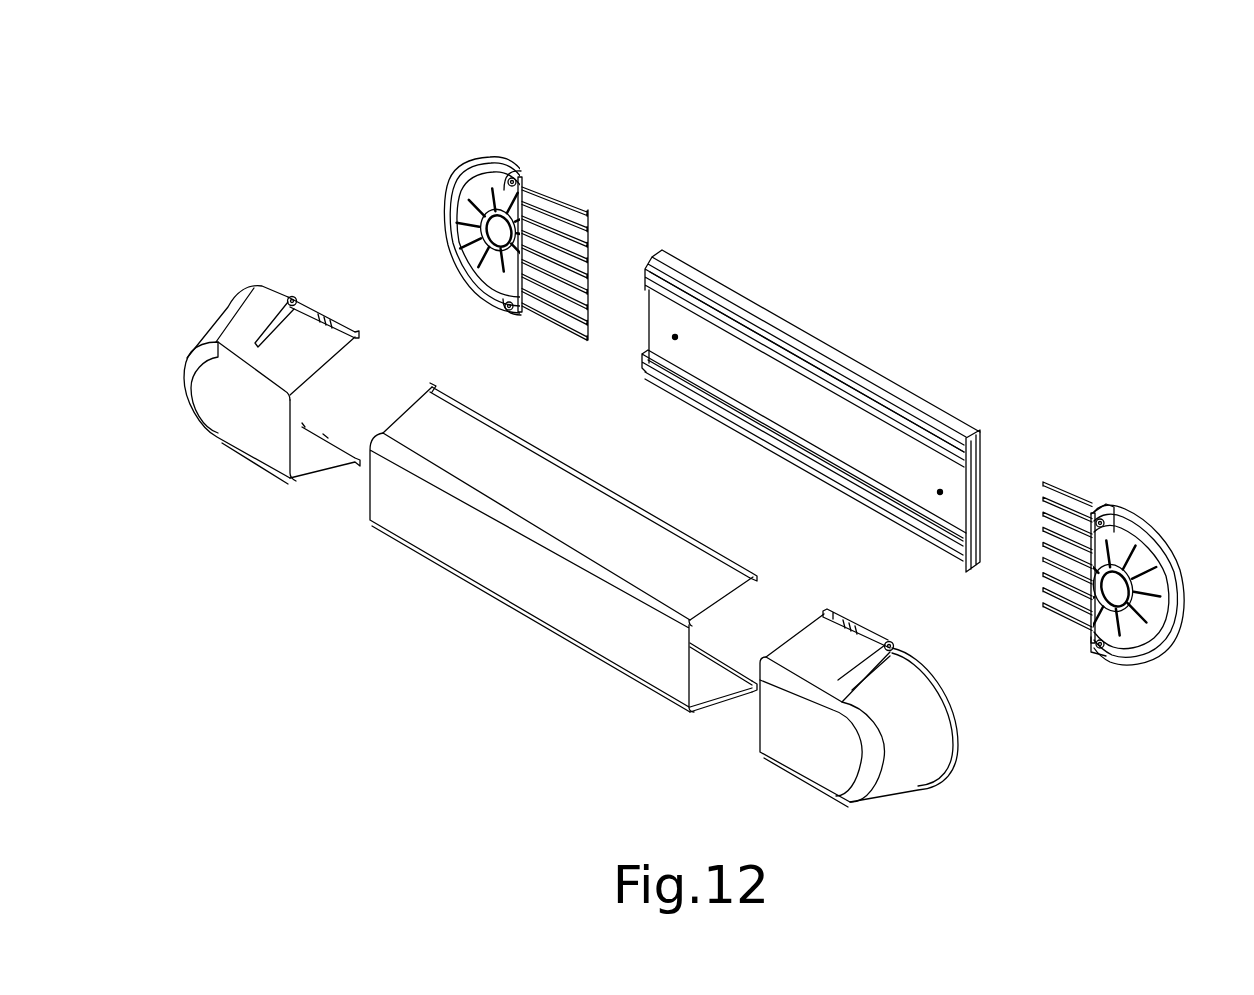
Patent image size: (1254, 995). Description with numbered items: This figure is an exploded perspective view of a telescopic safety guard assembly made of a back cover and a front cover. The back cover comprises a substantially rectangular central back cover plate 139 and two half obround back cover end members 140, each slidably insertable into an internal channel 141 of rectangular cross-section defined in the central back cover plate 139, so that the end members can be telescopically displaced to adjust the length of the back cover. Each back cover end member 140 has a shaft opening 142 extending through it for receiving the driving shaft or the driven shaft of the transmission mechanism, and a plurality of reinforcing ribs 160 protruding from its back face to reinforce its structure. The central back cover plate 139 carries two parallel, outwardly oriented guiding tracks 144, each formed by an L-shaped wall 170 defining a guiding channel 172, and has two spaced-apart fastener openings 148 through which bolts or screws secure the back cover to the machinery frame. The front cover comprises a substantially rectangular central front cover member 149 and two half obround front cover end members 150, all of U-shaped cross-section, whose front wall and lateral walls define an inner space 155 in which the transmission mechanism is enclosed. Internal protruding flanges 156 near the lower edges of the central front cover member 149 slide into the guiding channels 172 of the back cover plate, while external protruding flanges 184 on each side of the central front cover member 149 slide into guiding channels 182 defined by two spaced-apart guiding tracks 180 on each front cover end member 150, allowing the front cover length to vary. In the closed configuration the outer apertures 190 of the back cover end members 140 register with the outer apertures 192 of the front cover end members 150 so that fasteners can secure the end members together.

The central back cover plate 139 is at (800, 390).
The back cover end member 140 is at (763, 390).
The internal channel 141 is at (978, 467).
The shaft opening 142 is at (494, 230).
The guiding track 144 is at (815, 467).
The fastener opening 148 is at (673, 339).
The central front cover member 149 is at (606, 572).
The front cover end member 150 is at (245, 423).
The inner space 155 is at (764, 664).
The internal protruding flange 156 is at (760, 650).
The reinforcing rib 160 is at (547, 224).
The L-shaped wall 170 is at (783, 390).
The guiding channel 172 is at (665, 288).
The guiding track 180 is at (598, 451).
The guiding channel 182 is at (330, 320).
The external protruding flange 184 is at (653, 513).
The outer aperture 190 is at (514, 178).
The outer aperture 192 is at (296, 299).